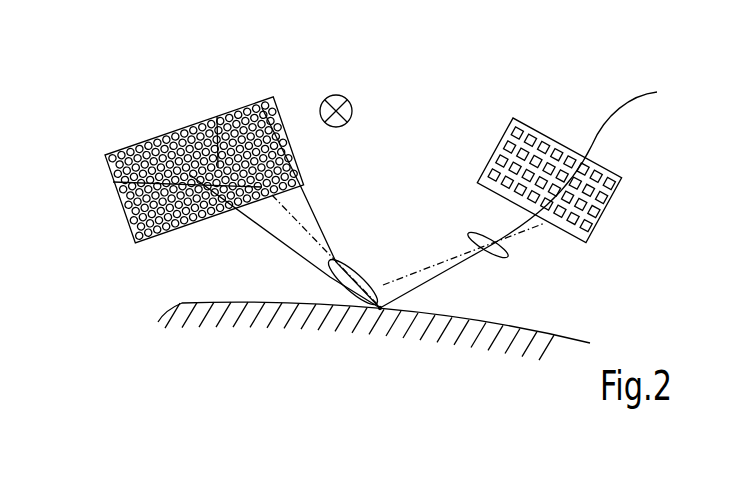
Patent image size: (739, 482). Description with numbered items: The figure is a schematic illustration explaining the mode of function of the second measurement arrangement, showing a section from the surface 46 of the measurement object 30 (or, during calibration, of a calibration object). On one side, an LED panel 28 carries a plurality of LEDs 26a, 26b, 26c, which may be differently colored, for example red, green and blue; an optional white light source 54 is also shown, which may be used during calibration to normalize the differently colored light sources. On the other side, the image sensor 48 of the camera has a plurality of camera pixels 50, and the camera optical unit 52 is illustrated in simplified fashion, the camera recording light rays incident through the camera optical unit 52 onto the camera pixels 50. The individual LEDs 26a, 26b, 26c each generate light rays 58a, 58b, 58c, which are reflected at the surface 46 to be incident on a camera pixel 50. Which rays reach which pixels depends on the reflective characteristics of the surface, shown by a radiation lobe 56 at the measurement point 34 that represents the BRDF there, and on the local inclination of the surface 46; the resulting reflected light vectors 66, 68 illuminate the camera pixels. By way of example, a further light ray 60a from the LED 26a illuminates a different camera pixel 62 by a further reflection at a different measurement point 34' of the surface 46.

The LED panel 28 is at (147, 139).
The LED 26a is at (275, 98).
The LED 26b is at (217, 116).
The LED 26c is at (112, 182).
The white light source 54 is at (346, 98).
The light ray 58a is at (303, 198).
The light ray 58b is at (283, 222).
The light ray 58c is at (250, 222).
The further light ray 60a is at (313, 300).
The radiation lobe 56 is at (362, 282).
The light vector 66 is at (447, 270).
The camera pixel 50 is at (641, 109).
The light vector 68 is at (412, 273).
The camera optical unit 52 is at (500, 252).
The image sensor 48 is at (537, 128).
The camera pixel 62 is at (563, 227).
The surface 46 is at (542, 337).
The measurement object 30 is at (432, 332).
The measurement point 34 is at (357, 376).
The measurement point 34' is at (278, 385).